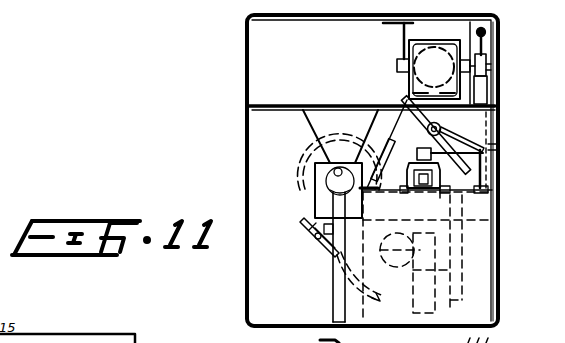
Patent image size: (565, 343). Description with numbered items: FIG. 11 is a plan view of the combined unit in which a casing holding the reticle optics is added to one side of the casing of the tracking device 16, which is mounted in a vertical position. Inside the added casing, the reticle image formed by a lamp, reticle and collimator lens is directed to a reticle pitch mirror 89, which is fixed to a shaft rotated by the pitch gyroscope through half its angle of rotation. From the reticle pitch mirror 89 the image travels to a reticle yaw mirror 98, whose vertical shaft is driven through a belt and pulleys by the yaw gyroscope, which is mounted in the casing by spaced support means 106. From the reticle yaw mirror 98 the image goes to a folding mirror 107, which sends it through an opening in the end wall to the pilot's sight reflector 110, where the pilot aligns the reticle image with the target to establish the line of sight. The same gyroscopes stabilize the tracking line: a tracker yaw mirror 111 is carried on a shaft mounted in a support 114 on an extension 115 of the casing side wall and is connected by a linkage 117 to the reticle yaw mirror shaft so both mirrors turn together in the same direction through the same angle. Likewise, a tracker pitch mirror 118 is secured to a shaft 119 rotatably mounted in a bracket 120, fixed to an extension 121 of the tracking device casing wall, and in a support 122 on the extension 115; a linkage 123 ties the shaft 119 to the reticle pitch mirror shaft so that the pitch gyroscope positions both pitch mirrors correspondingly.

The tracking device 16 is at (262, 62).
The extension 121 is at (337, 20).
The bracket 120 is at (402, 52).
The tracker pitch mirror 118 is at (430, 46).
The shaft 119 is at (486, 53).
The support 122 is at (488, 63).
The linkage 123 is at (481, 91).
The tracker yaw mirror 111 is at (405, 102).
The support 114 is at (486, 133).
The extension 115 is at (498, 147).
The support means 106 is at (309, 134).
The linkage 117 is at (385, 166).
The reticle pitch mirror 89 is at (316, 206).
The reticle yaw mirror 98 is at (306, 238).
The folding mirror 107 is at (446, 303).
The pilot's sight reflector 110 is at (373, 318).